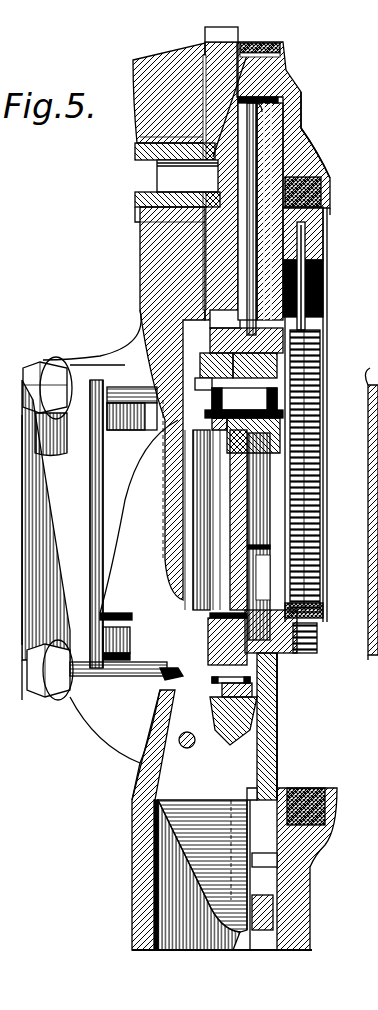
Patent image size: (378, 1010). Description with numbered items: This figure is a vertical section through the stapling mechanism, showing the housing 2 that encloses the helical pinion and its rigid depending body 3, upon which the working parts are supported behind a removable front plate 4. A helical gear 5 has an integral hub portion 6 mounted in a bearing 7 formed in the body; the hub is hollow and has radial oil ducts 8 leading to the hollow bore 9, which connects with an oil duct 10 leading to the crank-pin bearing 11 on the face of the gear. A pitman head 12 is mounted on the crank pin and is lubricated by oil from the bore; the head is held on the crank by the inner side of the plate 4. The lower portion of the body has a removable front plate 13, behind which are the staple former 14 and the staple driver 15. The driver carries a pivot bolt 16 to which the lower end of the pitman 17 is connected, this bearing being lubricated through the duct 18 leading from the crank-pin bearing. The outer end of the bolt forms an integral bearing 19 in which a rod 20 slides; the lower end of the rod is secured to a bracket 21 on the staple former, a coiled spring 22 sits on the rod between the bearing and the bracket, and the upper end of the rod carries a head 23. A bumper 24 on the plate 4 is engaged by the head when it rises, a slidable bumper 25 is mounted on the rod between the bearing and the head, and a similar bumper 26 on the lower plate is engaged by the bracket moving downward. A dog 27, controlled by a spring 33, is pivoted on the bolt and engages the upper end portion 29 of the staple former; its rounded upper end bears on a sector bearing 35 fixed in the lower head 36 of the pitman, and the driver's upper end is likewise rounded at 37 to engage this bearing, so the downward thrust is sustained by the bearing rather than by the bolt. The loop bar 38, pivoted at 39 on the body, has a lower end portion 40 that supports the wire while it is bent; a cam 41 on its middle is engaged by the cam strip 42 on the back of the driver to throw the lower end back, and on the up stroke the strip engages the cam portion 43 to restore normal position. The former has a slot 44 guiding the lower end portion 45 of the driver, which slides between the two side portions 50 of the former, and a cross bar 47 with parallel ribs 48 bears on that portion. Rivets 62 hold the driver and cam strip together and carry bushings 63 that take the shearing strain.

The housing 2 is at (133, 61).
The depending body 3 is at (163, 270).
The front plate 4 is at (300, 100).
The helical gear 5 is at (213, 45).
The hub portion 6 is at (137, 152).
The bearing 7 is at (140, 212).
The radial oil ducts 8 is at (173, 168).
The hollow bore 9 is at (163, 182).
The oil duct 10 is at (240, 133).
The crank-pin bearing 11 is at (270, 72).
The pitman head 12 is at (255, 43).
The front plate 13 is at (283, 925).
The staple former 14 is at (277, 690).
The staple driver 15 is at (237, 565).
The pivot bolt 16 is at (210, 400).
The pitman 17 is at (267, 287).
The duct 18 is at (262, 177).
The bearing 19 is at (324, 365).
The rod 20 is at (303, 322).
The bracket 21 is at (318, 640).
The coiled spring 22 is at (312, 470).
The head 23 is at (312, 232).
The bumper 24 is at (322, 190).
The bumper 25 is at (322, 297).
The bumper 26 is at (313, 790).
The dog 27 is at (262, 478).
The upper end portion of the staple former 29 is at (263, 573).
The spring 33 is at (322, 418).
The sector bearing 35 is at (220, 353).
The lower head 36 is at (220, 337).
The rounded upper end of the staple driver 37 is at (223, 370).
The loop bar 38 is at (215, 862).
The pivot 39 is at (177, 741).
The lower end portion 40 is at (272, 932).
The cam 41 is at (190, 813).
The cam strip 42 is at (215, 632).
The cam portion 43 is at (173, 676).
The slot 44 is at (235, 790).
The lower end portion of the staple driver 45 is at (258, 752).
The cross bar 47 is at (250, 690).
The parallel ribs 48 is at (212, 680).
The side portions 50 is at (270, 862).
The rivets 62 is at (315, 602).
The bushings 63 is at (228, 608).